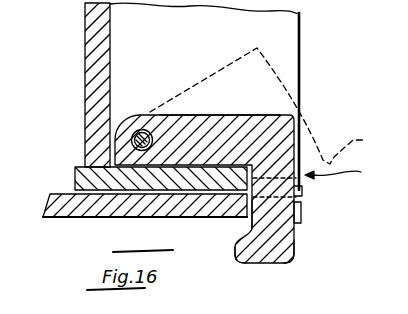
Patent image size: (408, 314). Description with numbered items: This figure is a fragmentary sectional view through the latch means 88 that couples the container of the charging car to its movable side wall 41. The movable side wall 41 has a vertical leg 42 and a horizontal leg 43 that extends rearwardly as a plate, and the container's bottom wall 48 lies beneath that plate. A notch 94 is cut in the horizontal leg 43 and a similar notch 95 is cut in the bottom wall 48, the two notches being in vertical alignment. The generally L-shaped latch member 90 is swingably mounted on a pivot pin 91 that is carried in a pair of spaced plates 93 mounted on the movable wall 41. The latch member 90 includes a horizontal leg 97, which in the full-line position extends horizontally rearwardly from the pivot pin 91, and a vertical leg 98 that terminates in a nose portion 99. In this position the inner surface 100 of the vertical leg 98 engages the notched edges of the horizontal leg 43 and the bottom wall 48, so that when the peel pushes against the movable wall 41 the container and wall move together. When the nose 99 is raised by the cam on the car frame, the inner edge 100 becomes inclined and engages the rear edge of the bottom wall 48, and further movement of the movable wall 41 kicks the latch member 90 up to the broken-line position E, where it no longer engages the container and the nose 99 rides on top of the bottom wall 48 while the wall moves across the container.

The movable side wall 41 is at (112, 33).
The vertical leg 42 is at (85, 33).
The horizontal leg 43 is at (75, 179).
The bottom wall 48 is at (50, 205).
The latch means 88 is at (345, 173).
The latch member 90 is at (204, 157).
The pivot pin 91 is at (142, 129).
The spaced plates 93 is at (301, 40).
The notch 94 is at (302, 189).
The notch 95 is at (252, 224).
The horizontal leg 97 is at (201, 115).
The vertical leg 98 is at (293, 251).
The nose portion 99 is at (238, 264).
The inner surface 100 is at (301, 212).
The kicked-up latch position E is at (263, 122).